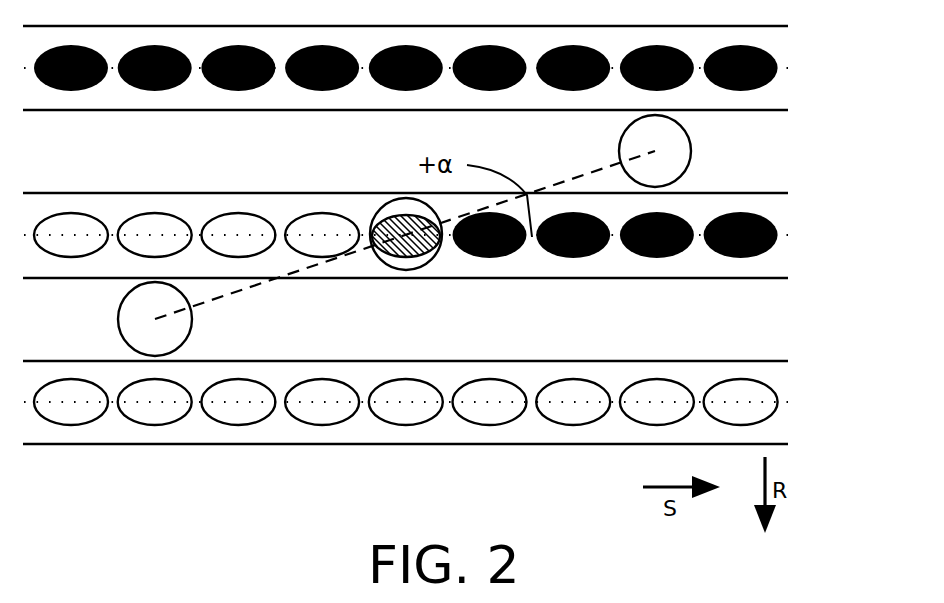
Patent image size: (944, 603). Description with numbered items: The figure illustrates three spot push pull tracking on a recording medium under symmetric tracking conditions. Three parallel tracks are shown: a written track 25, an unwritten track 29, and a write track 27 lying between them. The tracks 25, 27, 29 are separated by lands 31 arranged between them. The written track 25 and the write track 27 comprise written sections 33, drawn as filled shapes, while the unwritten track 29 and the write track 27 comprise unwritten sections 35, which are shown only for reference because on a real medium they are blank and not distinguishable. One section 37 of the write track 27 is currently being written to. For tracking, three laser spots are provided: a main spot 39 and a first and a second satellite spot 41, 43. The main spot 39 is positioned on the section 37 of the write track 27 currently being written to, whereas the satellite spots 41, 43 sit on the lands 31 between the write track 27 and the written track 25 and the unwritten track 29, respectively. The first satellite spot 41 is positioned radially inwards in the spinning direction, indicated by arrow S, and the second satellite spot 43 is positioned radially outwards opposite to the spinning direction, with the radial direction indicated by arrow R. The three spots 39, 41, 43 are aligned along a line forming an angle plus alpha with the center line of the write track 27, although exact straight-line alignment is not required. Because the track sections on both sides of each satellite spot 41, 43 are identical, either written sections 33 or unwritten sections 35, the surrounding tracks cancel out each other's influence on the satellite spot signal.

The written track 25 is at (797, 46).
The write track 27 is at (797, 218).
The unwritten track 29 is at (797, 376).
The lands 31 is at (797, 131).
The written sections 33 is at (180, 86).
The unwritten sections 35 is at (163, 213).
The section currently being written to 37 is at (388, 220).
The main spot 39 is at (437, 255).
The first satellite spot 41 is at (692, 152).
The second satellite spot 43 is at (120, 298).